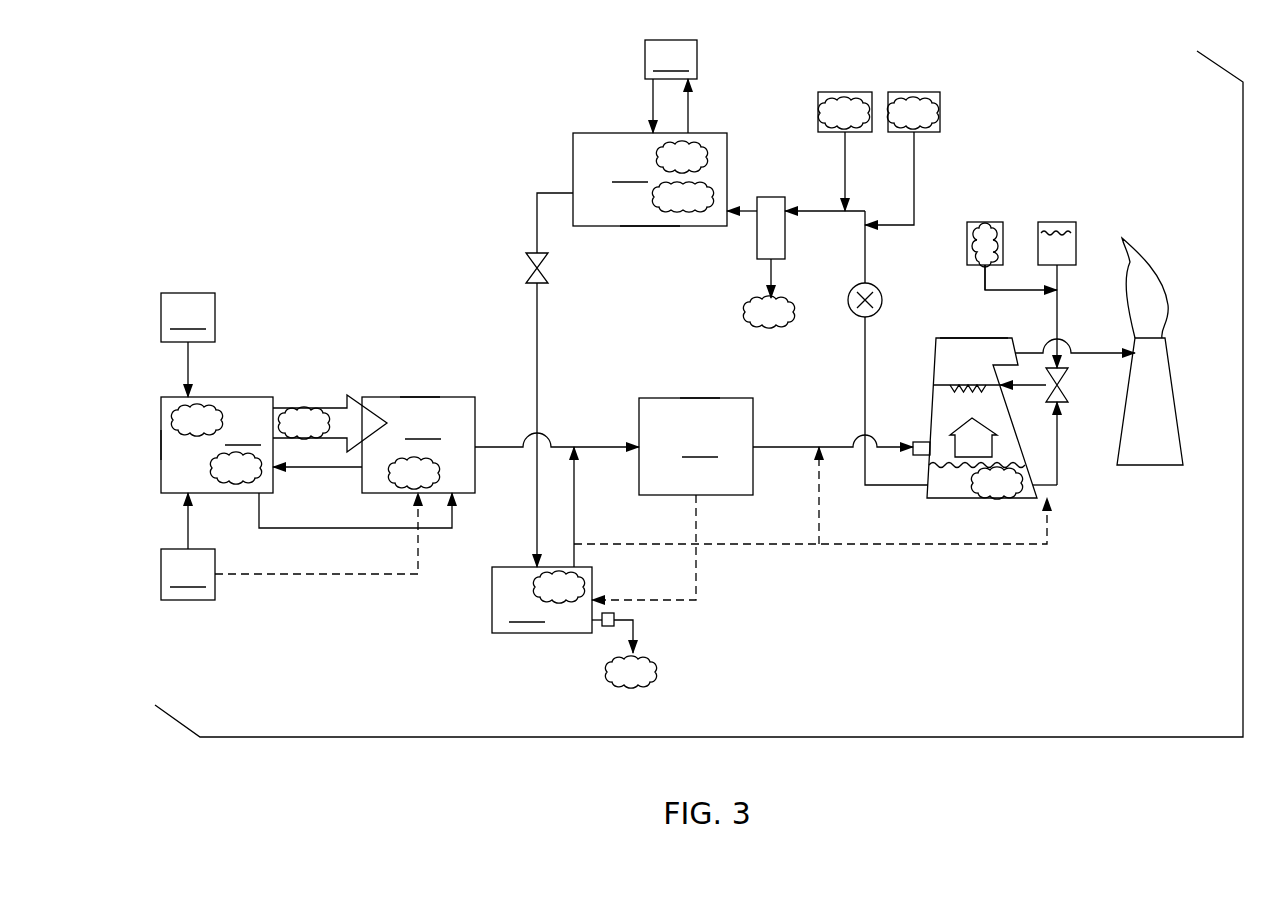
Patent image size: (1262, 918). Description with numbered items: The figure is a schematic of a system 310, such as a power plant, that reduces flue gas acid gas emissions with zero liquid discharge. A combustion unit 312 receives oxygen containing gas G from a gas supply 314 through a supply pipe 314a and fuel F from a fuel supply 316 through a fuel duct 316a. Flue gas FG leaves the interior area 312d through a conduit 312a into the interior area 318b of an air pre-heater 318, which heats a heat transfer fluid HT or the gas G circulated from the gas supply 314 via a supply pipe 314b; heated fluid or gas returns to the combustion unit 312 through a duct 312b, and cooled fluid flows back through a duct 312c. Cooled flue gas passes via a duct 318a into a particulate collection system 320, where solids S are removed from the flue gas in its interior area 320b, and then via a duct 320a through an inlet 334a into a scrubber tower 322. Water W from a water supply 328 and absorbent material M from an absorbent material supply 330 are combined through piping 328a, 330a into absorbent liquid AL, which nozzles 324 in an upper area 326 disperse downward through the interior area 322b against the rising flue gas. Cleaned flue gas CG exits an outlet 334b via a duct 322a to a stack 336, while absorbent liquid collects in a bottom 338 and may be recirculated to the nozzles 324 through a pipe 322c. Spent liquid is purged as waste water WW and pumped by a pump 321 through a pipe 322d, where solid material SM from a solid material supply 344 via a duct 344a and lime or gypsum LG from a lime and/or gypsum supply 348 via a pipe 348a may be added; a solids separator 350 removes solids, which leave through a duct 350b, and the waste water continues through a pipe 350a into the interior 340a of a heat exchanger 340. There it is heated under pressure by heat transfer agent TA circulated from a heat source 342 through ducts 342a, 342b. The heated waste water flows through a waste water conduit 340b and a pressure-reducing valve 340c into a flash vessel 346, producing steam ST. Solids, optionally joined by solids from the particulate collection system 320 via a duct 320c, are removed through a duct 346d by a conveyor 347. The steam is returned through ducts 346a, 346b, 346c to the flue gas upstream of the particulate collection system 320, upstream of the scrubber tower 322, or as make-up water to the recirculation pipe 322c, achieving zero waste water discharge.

The system 310 is at (702, 737).
The combustion unit 312 is at (217, 445).
The conduit 312a is at (328, 407).
The duct 312b is at (315, 471).
The duct 312c is at (310, 529).
The interior area 312d is at (161, 445).
The gas supply 314 is at (188, 574).
The supply pipe 314a is at (188, 528).
The supply pipe 314b is at (315, 577).
The fuel supply 316 is at (188, 317).
The fuel duct 316a is at (188, 362).
The air pre-heater 318 is at (418, 445).
The duct 318a is at (555, 442).
The interior area 318b is at (418, 397).
The particulate collection system 320 is at (696, 446).
The duct 320a is at (790, 442).
The interior area 320b is at (697, 397).
The duct 320c is at (696, 570).
The pump 321 is at (845, 306).
The scrubber tower 322 is at (936, 338).
The duct 322a is at (1088, 352).
The interior area 322b is at (1010, 435).
The pipe 322c is at (1057, 472).
The pipe 322d is at (867, 250).
The nozzles 324 is at (952, 383).
The upper area 326 is at (960, 350).
The water supply 328 is at (1057, 222).
The piping 328a is at (1060, 278).
The absorbent material supply 330 is at (985, 222).
The piping 330a is at (1002, 273).
The inlet 334a is at (912, 440).
The outlet 334b is at (1020, 348).
The stack 336 is at (1165, 407).
The bottom 338 is at (947, 493).
The heat exchanger 340 is at (650, 179).
The interior 340a is at (648, 226).
The waste water conduit 340b is at (537, 293).
The valve 340c is at (526, 263).
The heat source 342 is at (671, 59).
The duct 342a is at (653, 97).
The duct 342b is at (688, 110).
The solid material supply 344 is at (845, 92).
The duct 344a is at (845, 143).
The flash vessel 346 is at (542, 600).
The duct 346a is at (574, 512).
The duct 346b is at (819, 512).
The duct 346c is at (935, 545).
The duct 346d is at (633, 630).
The screw or pneumatic conveyor 347 is at (605, 628).
The lime and/or gypsum supply 348 is at (914, 92).
The pipe 348a is at (915, 168).
The solids separator 350 is at (785, 233).
The pipe 350a is at (753, 205).
The duct 350b is at (771, 268).